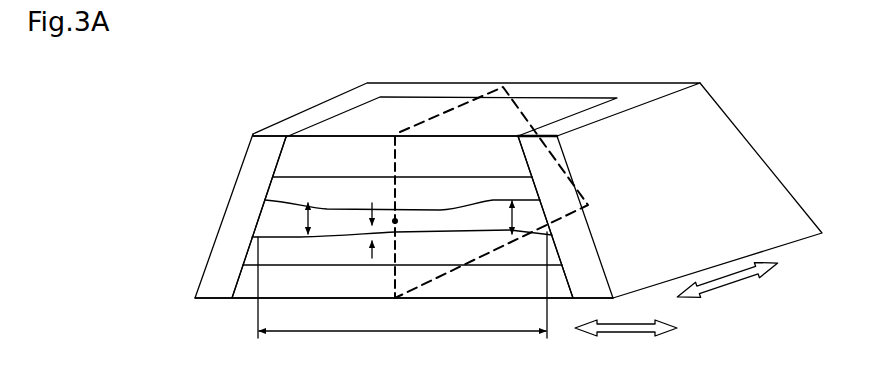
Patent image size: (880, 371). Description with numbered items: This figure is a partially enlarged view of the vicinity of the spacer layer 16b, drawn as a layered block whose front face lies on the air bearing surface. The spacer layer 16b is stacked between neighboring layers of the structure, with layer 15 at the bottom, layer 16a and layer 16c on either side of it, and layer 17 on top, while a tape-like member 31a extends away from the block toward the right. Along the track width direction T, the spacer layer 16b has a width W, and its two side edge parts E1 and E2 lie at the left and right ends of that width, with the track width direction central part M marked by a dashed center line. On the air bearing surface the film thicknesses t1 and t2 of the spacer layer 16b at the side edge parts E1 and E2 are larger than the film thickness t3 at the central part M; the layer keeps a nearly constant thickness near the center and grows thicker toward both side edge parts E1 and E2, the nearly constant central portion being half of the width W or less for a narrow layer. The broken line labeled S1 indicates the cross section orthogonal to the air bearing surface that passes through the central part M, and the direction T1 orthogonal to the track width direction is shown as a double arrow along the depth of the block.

The substrate layer 15 is at (250, 285).
The first layer 16a is at (260, 253).
The spacer layer 16b is at (322, 222).
The third layer 16c is at (278, 178).
The top layer 17 is at (300, 148).
The tape 31a is at (733, 147).
The side edge part E1 is at (267, 222).
The side edge part E2 is at (528, 221).
The track width direction central part M is at (363, 247).
The cross section S1 is at (525, 118).
The film thickness t1 is at (297, 218).
The film thickness t2 is at (497, 217).
The film thickness t3 is at (354, 231).
The width W is at (402, 296).
The track width direction T is at (626, 338).
The direction orthogonal to the track width direction T1 is at (728, 282).